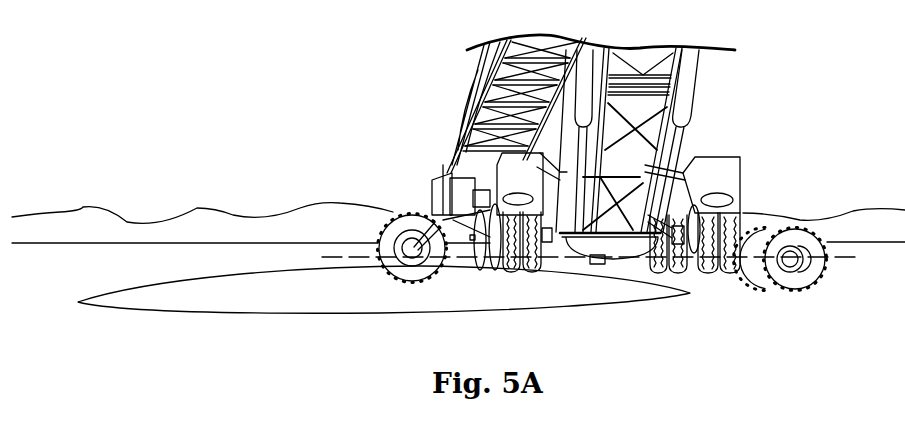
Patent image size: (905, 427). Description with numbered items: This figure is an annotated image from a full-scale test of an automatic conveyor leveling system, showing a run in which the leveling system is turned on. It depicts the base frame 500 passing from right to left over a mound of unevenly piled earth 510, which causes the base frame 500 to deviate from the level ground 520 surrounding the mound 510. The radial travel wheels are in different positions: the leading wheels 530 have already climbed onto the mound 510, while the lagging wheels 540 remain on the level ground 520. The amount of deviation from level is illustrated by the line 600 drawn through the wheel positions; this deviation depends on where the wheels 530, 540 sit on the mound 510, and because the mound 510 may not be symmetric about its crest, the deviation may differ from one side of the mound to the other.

The base frame 500 is at (600, 163).
The mound of unevenly piled earth 510 is at (188, 295).
The level ground 520 is at (57, 293).
The leading wheels 530 is at (395, 213).
The lagging wheels 540 is at (798, 228).
The line 600 is at (847, 258).